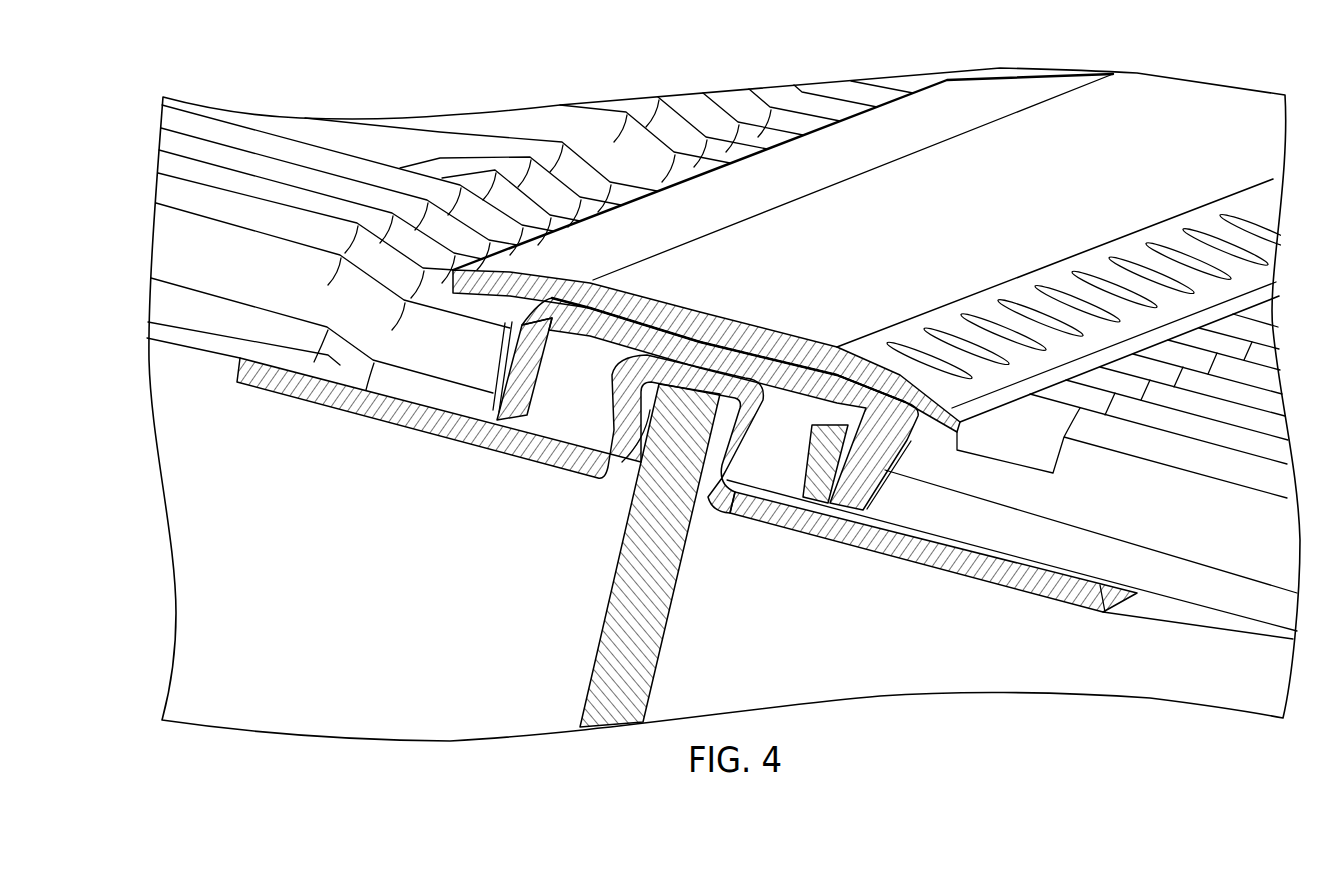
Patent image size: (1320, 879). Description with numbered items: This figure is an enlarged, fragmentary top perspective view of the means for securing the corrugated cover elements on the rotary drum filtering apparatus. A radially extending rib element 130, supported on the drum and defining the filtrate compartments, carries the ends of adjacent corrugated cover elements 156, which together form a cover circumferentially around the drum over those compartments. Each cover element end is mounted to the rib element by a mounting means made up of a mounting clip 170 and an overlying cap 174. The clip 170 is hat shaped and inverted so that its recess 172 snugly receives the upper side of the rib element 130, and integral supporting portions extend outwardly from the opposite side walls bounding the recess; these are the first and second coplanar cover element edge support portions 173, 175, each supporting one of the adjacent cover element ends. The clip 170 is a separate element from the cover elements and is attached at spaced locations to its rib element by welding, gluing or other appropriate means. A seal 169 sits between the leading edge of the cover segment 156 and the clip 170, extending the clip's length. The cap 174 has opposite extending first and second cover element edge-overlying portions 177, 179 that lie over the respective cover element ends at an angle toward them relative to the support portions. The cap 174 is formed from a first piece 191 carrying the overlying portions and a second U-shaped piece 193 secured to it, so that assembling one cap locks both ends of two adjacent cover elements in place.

The rib element 130 is at (622, 612).
The corrugated cover element 156 is at (468, 125).
The seal 169 is at (510, 410).
The mounting clip 170 is at (1048, 600).
The recess 172 is at (612, 450).
The first cover element edge support portion 173 is at (538, 450).
The cap 174 is at (997, 147).
The second cover element edge support portion 175 is at (950, 560).
The first cover element edge-overlying portion 177 is at (513, 292).
The second cover element edge-overlying portion 179 is at (905, 408).
The first piece 191 is at (910, 183).
The second U-shaped piece 193 is at (813, 490).